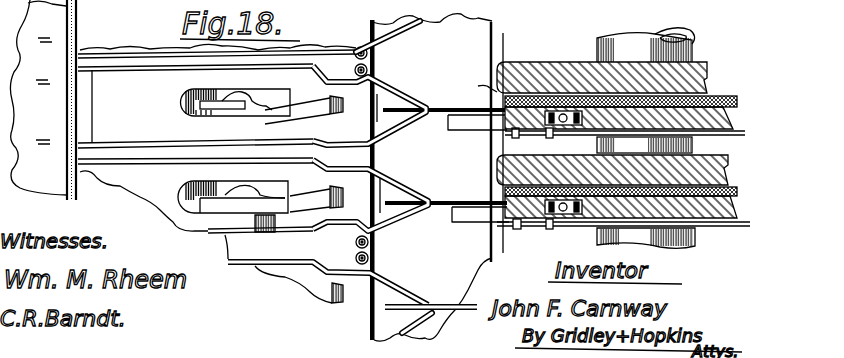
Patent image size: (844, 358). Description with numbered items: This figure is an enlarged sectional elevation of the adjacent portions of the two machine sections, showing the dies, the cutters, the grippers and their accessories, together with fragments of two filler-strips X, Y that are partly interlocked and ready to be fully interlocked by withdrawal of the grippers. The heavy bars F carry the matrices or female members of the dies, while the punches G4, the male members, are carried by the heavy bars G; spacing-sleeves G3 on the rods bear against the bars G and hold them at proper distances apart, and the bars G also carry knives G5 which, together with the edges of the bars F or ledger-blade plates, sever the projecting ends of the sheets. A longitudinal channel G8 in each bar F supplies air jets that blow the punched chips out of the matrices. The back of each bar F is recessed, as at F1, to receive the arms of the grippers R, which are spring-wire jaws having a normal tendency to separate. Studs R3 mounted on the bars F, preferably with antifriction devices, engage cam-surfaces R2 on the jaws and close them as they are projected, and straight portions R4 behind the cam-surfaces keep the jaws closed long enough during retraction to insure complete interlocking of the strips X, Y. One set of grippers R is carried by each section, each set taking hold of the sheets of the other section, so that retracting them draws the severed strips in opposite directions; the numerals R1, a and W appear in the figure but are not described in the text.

The grippers R is at (160, 142).
The connecting rod R1 is at (170, 166).
The cam-surfaces R2 is at (400, 97).
The studs R3 is at (368, 58).
The straight portions R4 is at (370, 101).
The filler-strip X is at (400, 43).
The filler-strip Y is at (433, 110).
The knives G5 is at (479, 82).
The block a is at (533, 65).
The recess F1 is at (728, 113).
The bars G is at (726, 170).
The bars F is at (736, 199).
The latch W is at (558, 118).
The longitudinal channel G8 is at (550, 138).
The punches G4 is at (598, 58).
The spacing-sleeves G3 is at (694, 48).